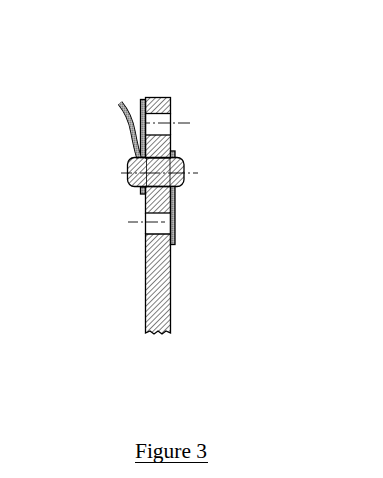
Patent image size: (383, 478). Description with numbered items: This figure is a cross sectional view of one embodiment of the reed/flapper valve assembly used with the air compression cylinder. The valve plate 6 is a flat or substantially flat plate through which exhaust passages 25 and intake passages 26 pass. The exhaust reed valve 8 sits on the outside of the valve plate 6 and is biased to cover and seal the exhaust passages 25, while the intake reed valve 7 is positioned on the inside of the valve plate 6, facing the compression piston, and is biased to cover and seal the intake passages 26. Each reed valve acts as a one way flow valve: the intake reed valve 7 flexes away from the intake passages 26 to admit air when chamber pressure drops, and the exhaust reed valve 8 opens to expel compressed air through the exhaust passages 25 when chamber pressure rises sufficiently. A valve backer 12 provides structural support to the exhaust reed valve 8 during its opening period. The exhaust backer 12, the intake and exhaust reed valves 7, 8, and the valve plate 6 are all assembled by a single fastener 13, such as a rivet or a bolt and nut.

The valve plate 6 is at (158, 337).
The intake reed valve 7 is at (175, 242).
The exhaust reed valve 8 is at (140, 103).
The valve backer 12 is at (134, 133).
The fastener 13 is at (184, 161).
The exhaust passages 25 is at (155, 115).
The intake passages 26 is at (158, 223).